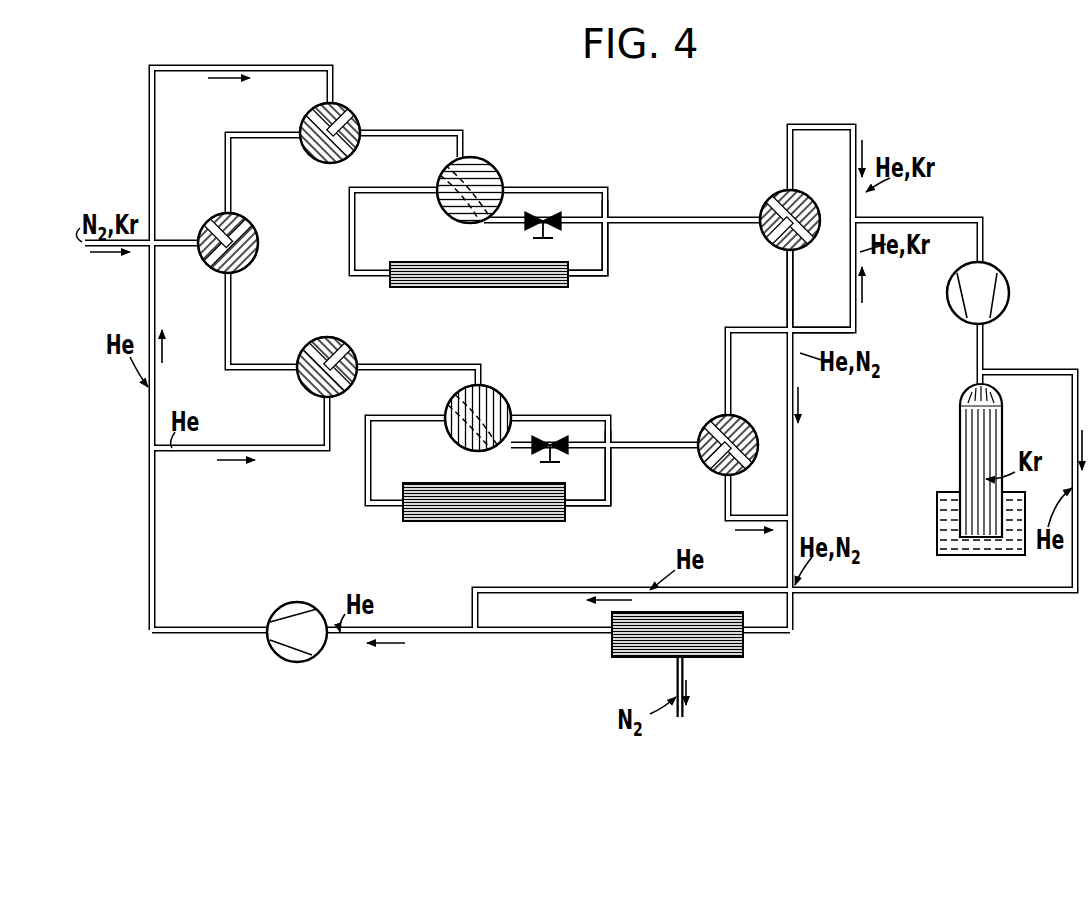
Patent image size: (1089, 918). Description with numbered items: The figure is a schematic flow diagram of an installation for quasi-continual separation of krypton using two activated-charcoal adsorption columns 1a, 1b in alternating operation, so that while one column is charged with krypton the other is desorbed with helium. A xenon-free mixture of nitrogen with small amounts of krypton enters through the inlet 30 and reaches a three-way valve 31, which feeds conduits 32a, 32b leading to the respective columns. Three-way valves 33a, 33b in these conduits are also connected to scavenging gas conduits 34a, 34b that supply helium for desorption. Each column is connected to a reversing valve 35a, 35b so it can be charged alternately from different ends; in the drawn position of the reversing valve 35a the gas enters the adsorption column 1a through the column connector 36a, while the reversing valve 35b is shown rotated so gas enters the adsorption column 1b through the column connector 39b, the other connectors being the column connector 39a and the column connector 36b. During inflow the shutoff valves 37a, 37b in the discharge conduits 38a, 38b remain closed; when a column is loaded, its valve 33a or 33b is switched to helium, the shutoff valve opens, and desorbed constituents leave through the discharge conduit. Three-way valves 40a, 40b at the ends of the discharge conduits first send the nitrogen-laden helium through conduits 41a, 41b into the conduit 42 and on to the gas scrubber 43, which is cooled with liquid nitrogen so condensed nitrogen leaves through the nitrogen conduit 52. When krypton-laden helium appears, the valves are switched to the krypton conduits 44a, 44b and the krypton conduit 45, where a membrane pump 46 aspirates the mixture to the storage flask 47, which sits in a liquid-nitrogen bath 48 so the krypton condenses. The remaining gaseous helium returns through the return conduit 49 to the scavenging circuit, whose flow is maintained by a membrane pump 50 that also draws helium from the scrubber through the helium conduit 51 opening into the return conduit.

The adsorption column 1a is at (418, 505).
The adsorption column 1b is at (520, 272).
The inlet 30 is at (178, 248).
The three-way valve 31 is at (225, 225).
The conduit 32a is at (229, 320).
The conduit 32b is at (290, 137).
The three-way valve 33a is at (348, 356).
The three-way valve 33b is at (345, 118).
The scavenging gas conduit 34a is at (293, 448).
The scavenging gas conduit 34b is at (152, 145).
The reversing valve 35a is at (490, 395).
The reversing valve 35b is at (480, 168).
The column connector 36a is at (368, 472).
The column connector 36b is at (355, 230).
The shutoff valve 37a is at (555, 435).
The shutoff valve 37b is at (548, 212).
The discharge conduit 38a is at (628, 443).
The discharge conduit 38b is at (685, 222).
The column connector 39a is at (590, 505).
The column connector 39b is at (606, 252).
The three-way valve 40a is at (700, 458).
The three-way valve 40b is at (768, 205).
The conduit 41a is at (724, 485).
The conduit 41b is at (795, 470).
The conduit 42 is at (792, 622).
The gas scrubber 43 is at (650, 640).
The krypton conduit 44a is at (858, 330).
The krypton conduit 44b is at (812, 127).
The krypton conduit 45 is at (945, 222).
The membrane pump 46 is at (988, 272).
The storage flask 47 is at (975, 430).
The bath 48 is at (940, 512).
The return conduit 49 is at (1040, 372).
The membrane pump 50 is at (288, 620).
The helium conduit 51 is at (528, 635).
The nitrogen conduit 52 is at (686, 672).